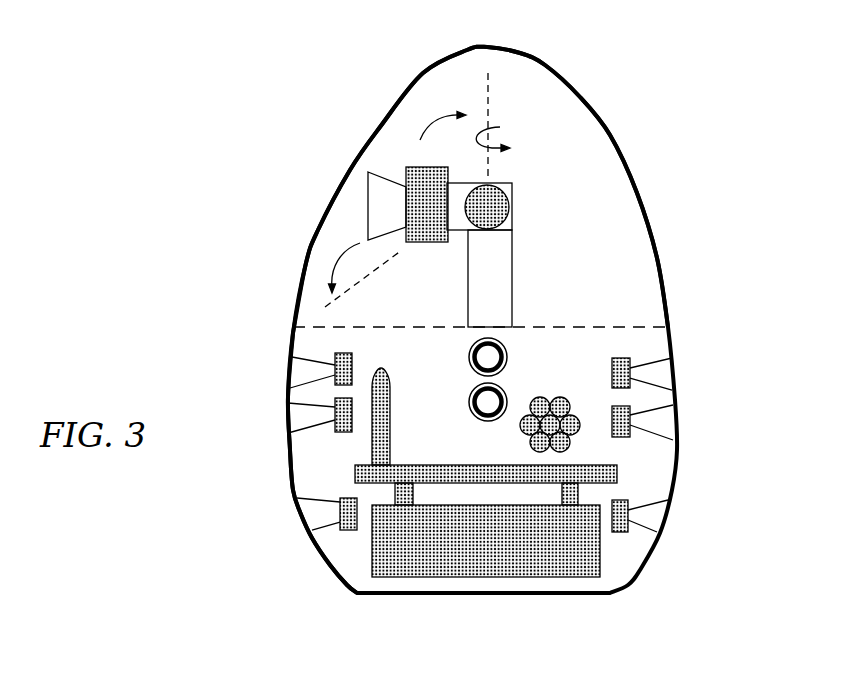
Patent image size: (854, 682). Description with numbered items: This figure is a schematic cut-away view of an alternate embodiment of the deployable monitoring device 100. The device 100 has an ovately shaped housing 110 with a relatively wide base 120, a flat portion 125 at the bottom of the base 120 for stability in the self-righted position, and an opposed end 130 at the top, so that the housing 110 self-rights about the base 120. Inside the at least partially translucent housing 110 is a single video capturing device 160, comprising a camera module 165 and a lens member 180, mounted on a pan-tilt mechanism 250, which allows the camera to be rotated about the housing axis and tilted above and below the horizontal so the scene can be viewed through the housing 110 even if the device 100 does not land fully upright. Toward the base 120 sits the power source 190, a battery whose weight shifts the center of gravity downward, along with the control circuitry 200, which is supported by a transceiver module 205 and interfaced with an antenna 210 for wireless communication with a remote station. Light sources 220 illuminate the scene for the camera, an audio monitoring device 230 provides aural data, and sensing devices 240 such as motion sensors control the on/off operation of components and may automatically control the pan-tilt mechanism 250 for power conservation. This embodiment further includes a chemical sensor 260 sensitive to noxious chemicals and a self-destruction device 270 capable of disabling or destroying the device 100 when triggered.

The deployable monitoring device 100 is at (666, 219).
The housing 110 is at (611, 135).
The base 120 is at (316, 569).
The flat portion 125 is at (570, 605).
The opposed end 130 is at (547, 63).
The video capturing device 160 is at (415, 251).
The camera module 165 is at (432, 244).
The lens member 180 is at (366, 190).
The power source 190 is at (467, 553).
The control circuitry 200 is at (617, 470).
The transceiver module 205 is at (395, 500).
The antenna 210 is at (370, 438).
The light sources 220 is at (338, 353).
The audio monitoring device 230 is at (622, 499).
The sensing devices 240 is at (335, 400).
The pan-tilt mechanism 250 is at (516, 231).
The chemical sensor 260 is at (355, 530).
The self-destruction device 270 is at (528, 428).